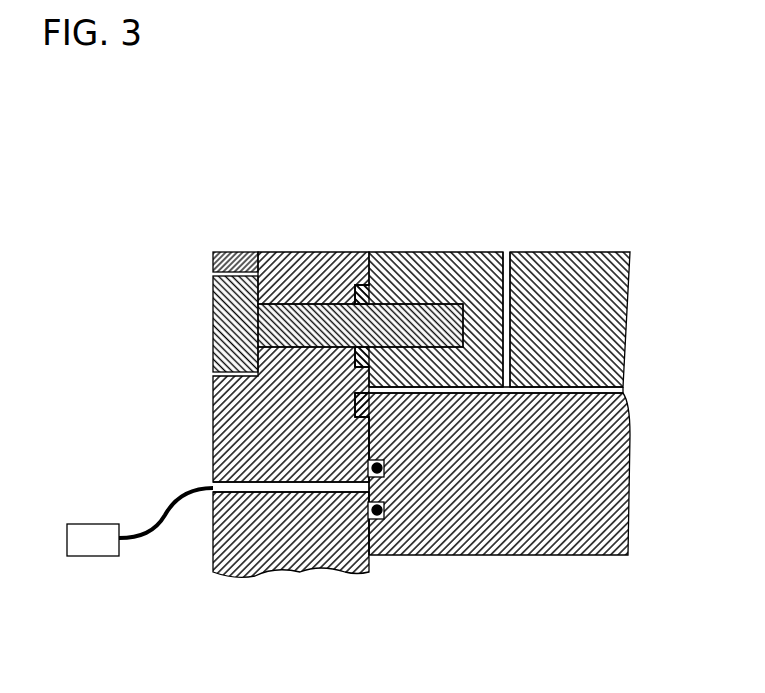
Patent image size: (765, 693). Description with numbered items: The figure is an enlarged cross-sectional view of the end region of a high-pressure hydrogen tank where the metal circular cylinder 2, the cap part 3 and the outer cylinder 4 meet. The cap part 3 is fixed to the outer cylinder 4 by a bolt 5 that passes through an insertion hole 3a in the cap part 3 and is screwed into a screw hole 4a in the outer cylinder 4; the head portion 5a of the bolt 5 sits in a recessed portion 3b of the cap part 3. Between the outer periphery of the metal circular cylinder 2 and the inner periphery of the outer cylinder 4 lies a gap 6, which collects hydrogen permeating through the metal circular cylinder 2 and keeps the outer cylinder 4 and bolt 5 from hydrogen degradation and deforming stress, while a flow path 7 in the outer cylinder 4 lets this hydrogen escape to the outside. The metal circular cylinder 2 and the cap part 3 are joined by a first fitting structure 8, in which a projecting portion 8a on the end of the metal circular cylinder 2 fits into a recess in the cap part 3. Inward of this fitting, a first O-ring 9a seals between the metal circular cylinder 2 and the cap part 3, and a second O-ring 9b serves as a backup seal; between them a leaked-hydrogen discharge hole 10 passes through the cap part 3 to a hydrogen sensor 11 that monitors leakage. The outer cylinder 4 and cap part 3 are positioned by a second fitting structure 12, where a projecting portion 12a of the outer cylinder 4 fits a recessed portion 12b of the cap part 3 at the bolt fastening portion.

The metal circular cylinder 2 is at (567, 530).
The cap part 3 is at (252, 387).
The insertion hole 3a is at (283, 303).
The recessed portion 3b is at (227, 377).
The outer cylinder 4 is at (572, 268).
The screw hole 4a is at (412, 304).
The bolt 5 is at (302, 316).
The head portion 5a is at (227, 312).
The gap 6 is at (623, 390).
The flow path 7 is at (500, 278).
The first fitting structure 8 is at (468, 628).
The projecting portion 8a is at (369, 417).
The first O-ring 9a is at (377, 520).
The second O-ring 9b is at (384, 477).
The leaked-hydrogen discharge hole 10 is at (272, 482).
The hydrogen sensor 11 is at (100, 524).
The second fitting structure 12 is at (298, 207).
The projecting portion 12a is at (357, 287).
The recessed portion 12b is at (362, 357).